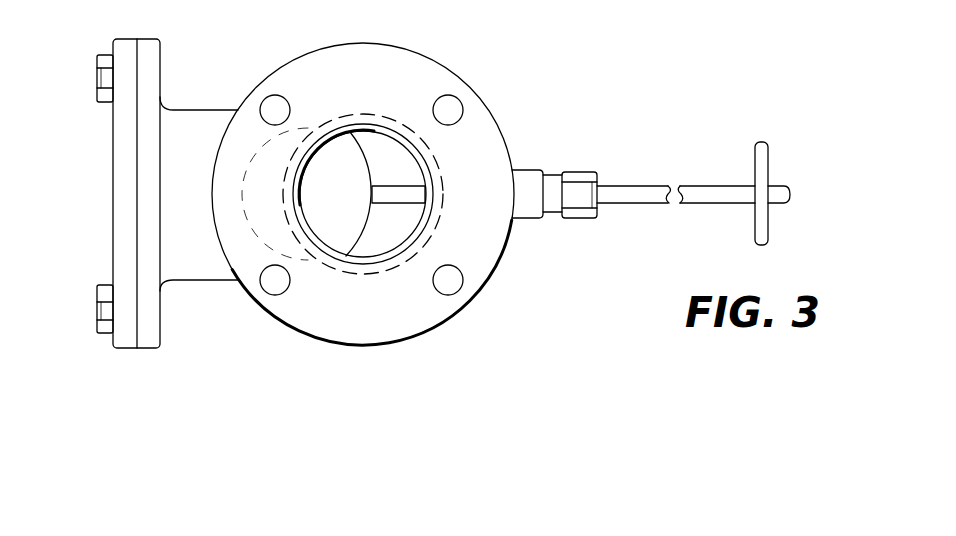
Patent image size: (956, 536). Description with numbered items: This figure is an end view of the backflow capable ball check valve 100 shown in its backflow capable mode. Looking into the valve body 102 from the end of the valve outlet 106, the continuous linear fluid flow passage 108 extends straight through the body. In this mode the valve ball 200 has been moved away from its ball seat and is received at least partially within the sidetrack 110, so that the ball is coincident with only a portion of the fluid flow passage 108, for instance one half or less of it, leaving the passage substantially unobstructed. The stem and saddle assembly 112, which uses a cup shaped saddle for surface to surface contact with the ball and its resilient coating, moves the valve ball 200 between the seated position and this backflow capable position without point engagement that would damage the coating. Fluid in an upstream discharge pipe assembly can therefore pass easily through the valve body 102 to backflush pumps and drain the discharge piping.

The backflow capable ball check valve 100 is at (572, 88).
The valve body 102 is at (377, 272).
The valve outlet 106 is at (420, 224).
The fluid flow passage 108 is at (402, 167).
The sidetrack 110 is at (123, 192).
The stem and saddle assembly 112 is at (633, 186).
The valve ball 200 is at (348, 156).